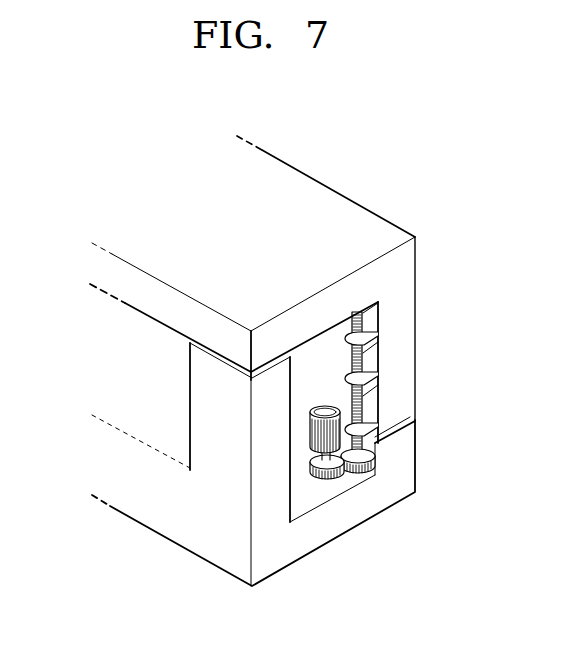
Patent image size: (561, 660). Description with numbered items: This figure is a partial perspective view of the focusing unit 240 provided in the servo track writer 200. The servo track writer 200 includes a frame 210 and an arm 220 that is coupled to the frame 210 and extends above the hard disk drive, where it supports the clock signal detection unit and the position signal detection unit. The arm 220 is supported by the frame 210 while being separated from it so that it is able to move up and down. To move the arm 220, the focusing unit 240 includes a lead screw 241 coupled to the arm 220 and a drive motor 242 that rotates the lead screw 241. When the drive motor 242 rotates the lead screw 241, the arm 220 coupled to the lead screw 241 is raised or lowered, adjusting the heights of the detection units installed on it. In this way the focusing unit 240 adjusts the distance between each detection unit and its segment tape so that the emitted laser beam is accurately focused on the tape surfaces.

The servo track writer 200 is at (289, 369).
The frame 210 is at (175, 527).
The arm 220 is at (309, 198).
The focusing unit 240 is at (349, 462).
The lead screw 241 is at (358, 428).
The drive motor 242 is at (317, 438).